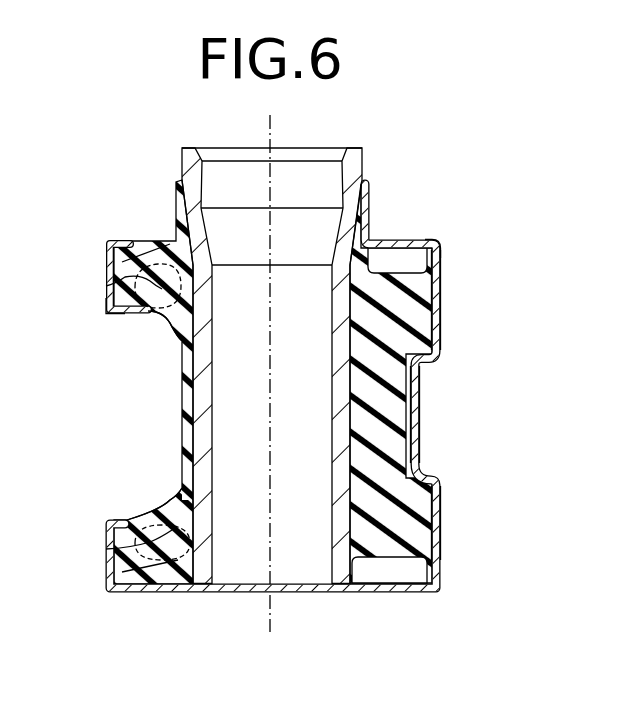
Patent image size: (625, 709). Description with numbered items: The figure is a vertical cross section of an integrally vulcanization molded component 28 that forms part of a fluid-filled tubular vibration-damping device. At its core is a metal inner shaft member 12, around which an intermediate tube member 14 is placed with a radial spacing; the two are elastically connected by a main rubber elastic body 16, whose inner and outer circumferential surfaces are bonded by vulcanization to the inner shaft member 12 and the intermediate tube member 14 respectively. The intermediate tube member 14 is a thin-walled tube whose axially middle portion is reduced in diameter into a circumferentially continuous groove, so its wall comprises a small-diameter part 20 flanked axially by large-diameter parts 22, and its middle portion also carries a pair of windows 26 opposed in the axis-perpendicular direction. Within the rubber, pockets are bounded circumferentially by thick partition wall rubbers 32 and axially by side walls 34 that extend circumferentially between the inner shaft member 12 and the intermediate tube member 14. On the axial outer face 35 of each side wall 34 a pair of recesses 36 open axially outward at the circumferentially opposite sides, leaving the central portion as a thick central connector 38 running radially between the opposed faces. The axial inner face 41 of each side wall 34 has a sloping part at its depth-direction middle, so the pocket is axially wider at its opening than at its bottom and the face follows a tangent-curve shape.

The inner shaft member 12 is at (340, 417).
The intermediate tube member 14 is at (446, 292).
The main rubber elastic body 16 is at (432, 321).
The small-diameter part 20 is at (411, 432).
The large-diameter parts 22 is at (437, 267).
The windows 26 is at (110, 308).
The integrally vulcanization molded component 28 is at (476, 134).
The partition wall rubbers 32 is at (375, 440).
The axially opposite side walls 34 is at (133, 244).
The axial outer face 35 is at (162, 245).
The recesses 36 is at (181, 289).
The central connector 38 is at (106, 286).
The axial inner face 41 is at (157, 336).